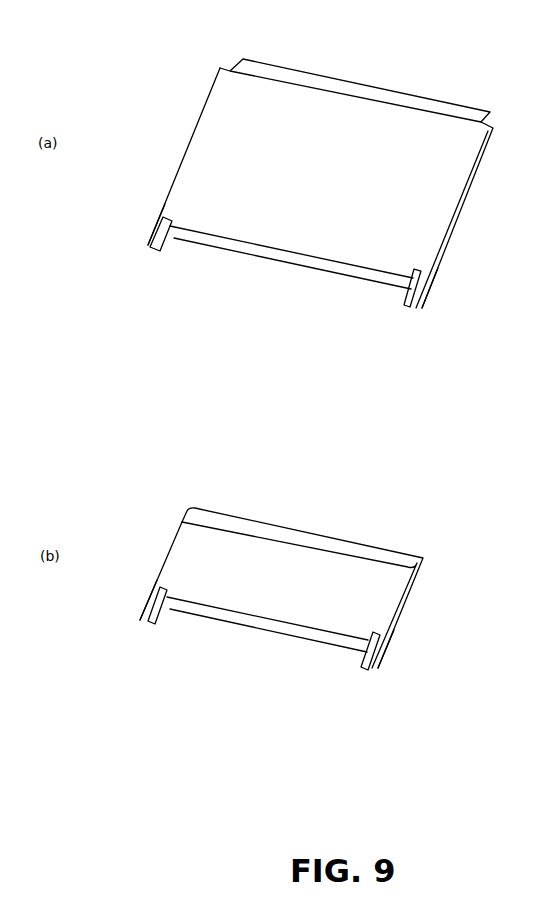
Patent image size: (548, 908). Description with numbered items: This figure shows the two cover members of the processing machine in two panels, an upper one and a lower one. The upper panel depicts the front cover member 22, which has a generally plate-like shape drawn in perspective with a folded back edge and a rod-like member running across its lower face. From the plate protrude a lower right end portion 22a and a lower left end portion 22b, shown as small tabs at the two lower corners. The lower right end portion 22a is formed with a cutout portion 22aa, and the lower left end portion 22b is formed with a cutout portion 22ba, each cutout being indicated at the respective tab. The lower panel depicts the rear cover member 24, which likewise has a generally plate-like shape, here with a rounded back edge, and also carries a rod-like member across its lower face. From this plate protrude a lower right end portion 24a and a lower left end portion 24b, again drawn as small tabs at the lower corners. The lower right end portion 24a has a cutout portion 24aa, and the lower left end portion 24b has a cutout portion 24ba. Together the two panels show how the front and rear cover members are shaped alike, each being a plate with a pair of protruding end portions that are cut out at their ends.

The front cover member 22 is at (343, 112).
The lower right end portion 22a is at (407, 293).
The cutout portion 22aa is at (430, 293).
The lower left end portion 22b is at (147, 240).
The cutout portion 22ba is at (167, 237).
The cover member 24 is at (292, 572).
The lower right end portion 24a is at (367, 662).
The cutout portion 24aa is at (378, 658).
The lower left end portion 24b is at (140, 618).
The cutout portion 24ba is at (158, 614).